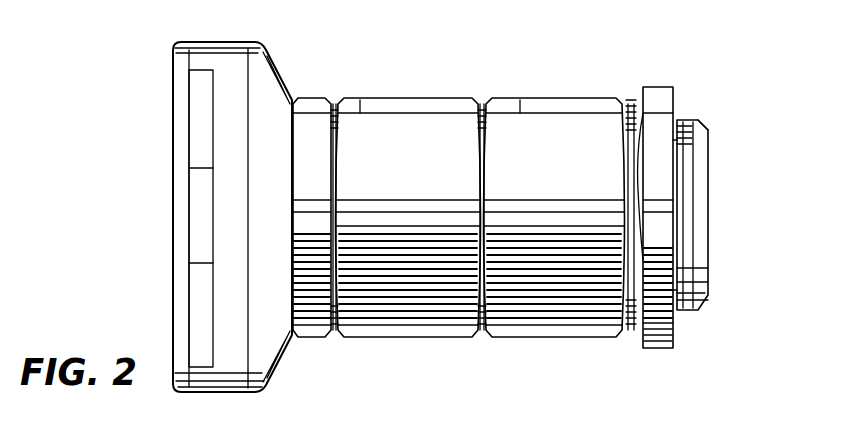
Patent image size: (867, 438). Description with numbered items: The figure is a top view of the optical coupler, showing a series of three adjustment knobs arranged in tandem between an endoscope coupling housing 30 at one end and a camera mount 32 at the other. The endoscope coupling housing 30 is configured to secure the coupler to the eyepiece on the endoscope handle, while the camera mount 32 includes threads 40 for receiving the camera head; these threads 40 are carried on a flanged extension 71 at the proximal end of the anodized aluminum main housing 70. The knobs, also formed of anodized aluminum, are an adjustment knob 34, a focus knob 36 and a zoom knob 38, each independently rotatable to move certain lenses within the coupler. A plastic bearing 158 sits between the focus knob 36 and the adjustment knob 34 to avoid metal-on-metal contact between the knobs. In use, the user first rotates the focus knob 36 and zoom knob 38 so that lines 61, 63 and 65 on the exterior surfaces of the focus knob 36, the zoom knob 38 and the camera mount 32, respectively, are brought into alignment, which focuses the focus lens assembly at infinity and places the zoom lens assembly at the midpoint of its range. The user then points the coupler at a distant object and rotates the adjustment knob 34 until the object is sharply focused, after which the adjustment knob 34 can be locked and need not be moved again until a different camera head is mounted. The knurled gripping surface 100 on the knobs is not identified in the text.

The endoscope coupling housing 30 is at (237, 42).
The camera mount 32 is at (663, 87).
The adjustment knob 34 is at (311, 98).
The focus knob 36 is at (434, 98).
The zoom knob 38 is at (556, 98).
The threads 40 is at (703, 128).
The line 61 is at (380, 212).
The line 63 is at (542, 212).
The line 65 is at (662, 207).
The main housing 70 is at (677, 322).
The flanged extension 71 is at (680, 120).
The knurled surface 100 is at (418, 330).
The plastic bearing 158 is at (333, 323).